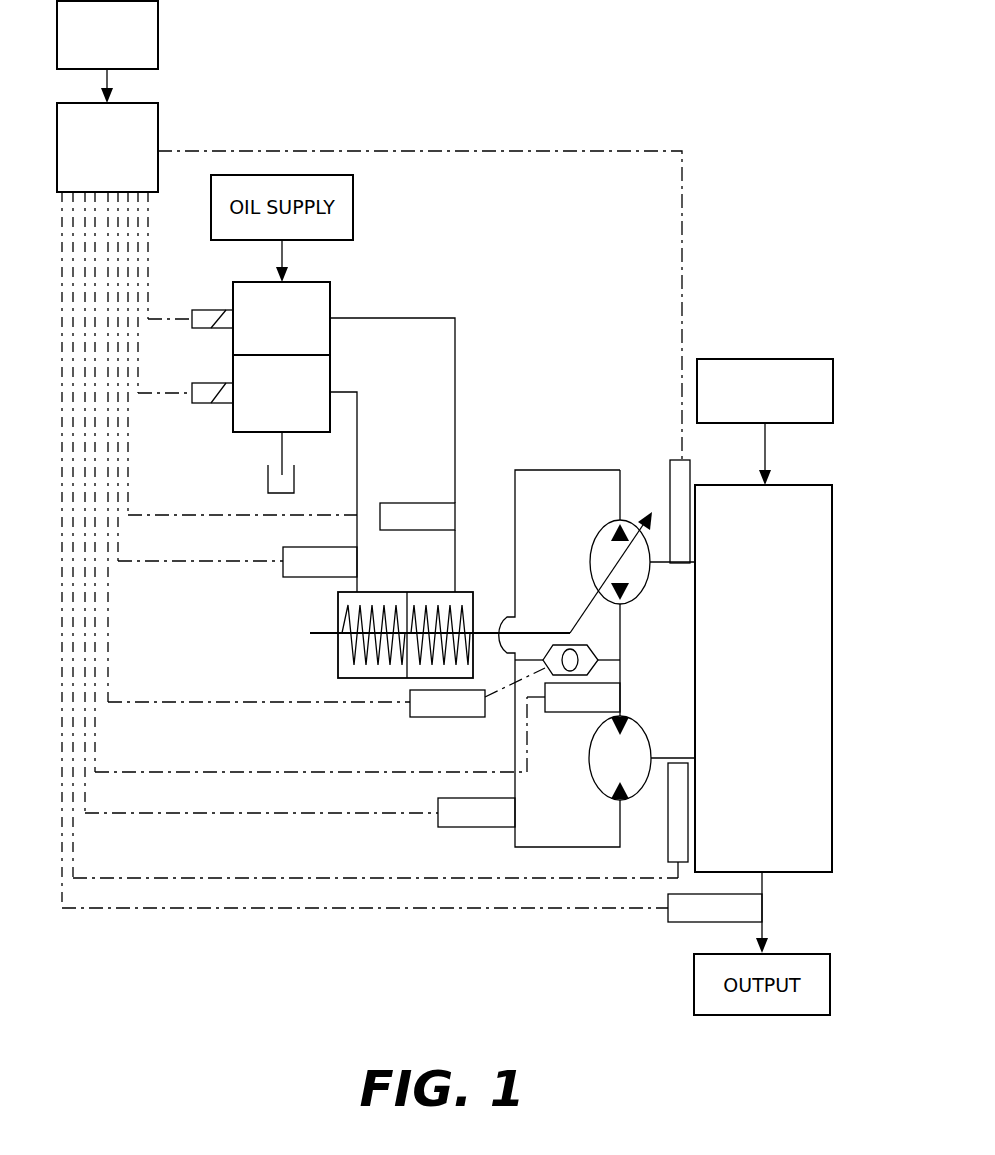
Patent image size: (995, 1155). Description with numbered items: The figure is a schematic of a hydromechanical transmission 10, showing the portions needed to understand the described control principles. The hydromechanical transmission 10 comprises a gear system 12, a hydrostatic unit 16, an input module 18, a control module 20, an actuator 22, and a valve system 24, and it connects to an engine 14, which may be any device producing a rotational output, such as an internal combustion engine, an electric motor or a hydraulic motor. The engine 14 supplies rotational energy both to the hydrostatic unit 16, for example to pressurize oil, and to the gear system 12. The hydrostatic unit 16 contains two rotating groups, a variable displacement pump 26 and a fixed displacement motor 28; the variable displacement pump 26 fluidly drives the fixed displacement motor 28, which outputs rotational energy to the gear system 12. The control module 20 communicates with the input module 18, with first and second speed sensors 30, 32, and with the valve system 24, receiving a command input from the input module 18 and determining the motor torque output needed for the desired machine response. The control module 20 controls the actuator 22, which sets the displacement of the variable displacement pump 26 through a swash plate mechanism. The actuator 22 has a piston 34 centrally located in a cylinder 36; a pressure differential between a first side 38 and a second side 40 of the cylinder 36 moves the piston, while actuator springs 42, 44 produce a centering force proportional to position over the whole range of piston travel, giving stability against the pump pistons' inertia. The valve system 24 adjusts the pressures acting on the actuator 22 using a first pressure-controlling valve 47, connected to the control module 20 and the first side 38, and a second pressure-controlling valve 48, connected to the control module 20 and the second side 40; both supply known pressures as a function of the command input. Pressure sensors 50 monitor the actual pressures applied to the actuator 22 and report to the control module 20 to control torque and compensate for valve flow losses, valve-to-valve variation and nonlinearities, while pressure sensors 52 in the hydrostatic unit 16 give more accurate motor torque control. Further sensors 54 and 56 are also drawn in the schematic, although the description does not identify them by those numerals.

The hydromechanical transmission 10 is at (720, 292).
The gear system 12 is at (774, 694).
The engine 14 is at (777, 406).
The hydrostatic unit 16 is at (573, 420).
The input module 18 is at (119, 52).
The control module 20 is at (119, 164).
The actuator 22 is at (473, 590).
The valve system 24 is at (372, 280).
The variable displacement pump 26 is at (598, 548).
The fixed displacement motor 28 is at (628, 745).
The first speed sensor 30 is at (678, 483).
The second speed sensor 32 is at (675, 848).
The piston 34 is at (409, 592).
The cylinder 36 is at (388, 592).
The first side 38 is at (347, 600).
The second side 40 is at (466, 598).
The actuator spring 42 is at (347, 654).
The actuator spring 44 is at (455, 616).
The first pressure-controlling valve 47 is at (294, 408).
The second pressure-controlling valve 48 is at (294, 334).
The pressure sensors 50 is at (390, 503).
The pressure sensors 52 is at (577, 712).
The temperature sensor 54 is at (420, 717).
The speed sensor 56 is at (755, 905).